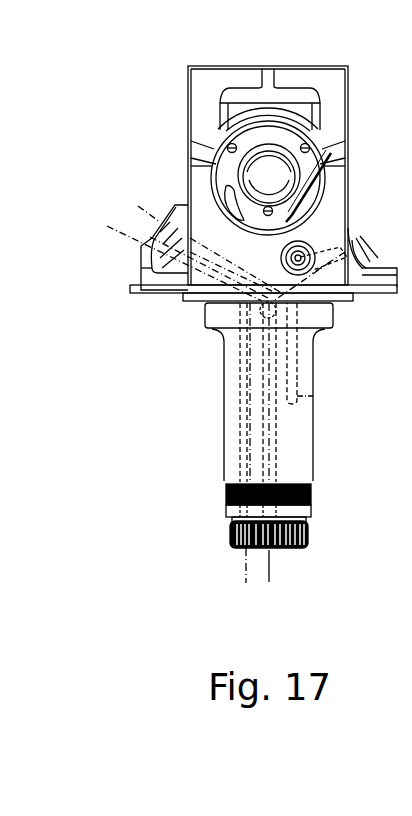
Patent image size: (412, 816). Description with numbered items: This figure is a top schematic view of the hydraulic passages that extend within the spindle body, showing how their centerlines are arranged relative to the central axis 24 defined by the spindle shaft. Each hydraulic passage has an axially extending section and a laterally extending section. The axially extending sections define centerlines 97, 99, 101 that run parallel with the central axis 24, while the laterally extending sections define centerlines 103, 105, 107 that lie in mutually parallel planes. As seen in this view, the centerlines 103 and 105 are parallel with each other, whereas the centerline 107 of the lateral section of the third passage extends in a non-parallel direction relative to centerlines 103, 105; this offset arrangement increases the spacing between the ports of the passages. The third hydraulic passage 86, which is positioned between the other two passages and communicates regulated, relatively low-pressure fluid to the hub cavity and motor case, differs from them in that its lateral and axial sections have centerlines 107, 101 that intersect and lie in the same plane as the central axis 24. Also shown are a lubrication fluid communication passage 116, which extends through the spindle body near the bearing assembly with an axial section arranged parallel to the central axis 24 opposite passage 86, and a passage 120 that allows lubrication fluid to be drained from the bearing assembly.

The central axis 24 is at (270, 561).
The hydraulic passage 86 is at (240, 432).
The centerline 97 is at (270, 562).
The centerline 99 is at (272, 549).
The centerline 101 is at (244, 565).
The centerline 103 is at (137, 205).
The centerline 105 is at (150, 236).
The centerline 107 is at (107, 227).
The lubrication fluid communication passage 116 is at (293, 376).
The passage 120 is at (312, 397).